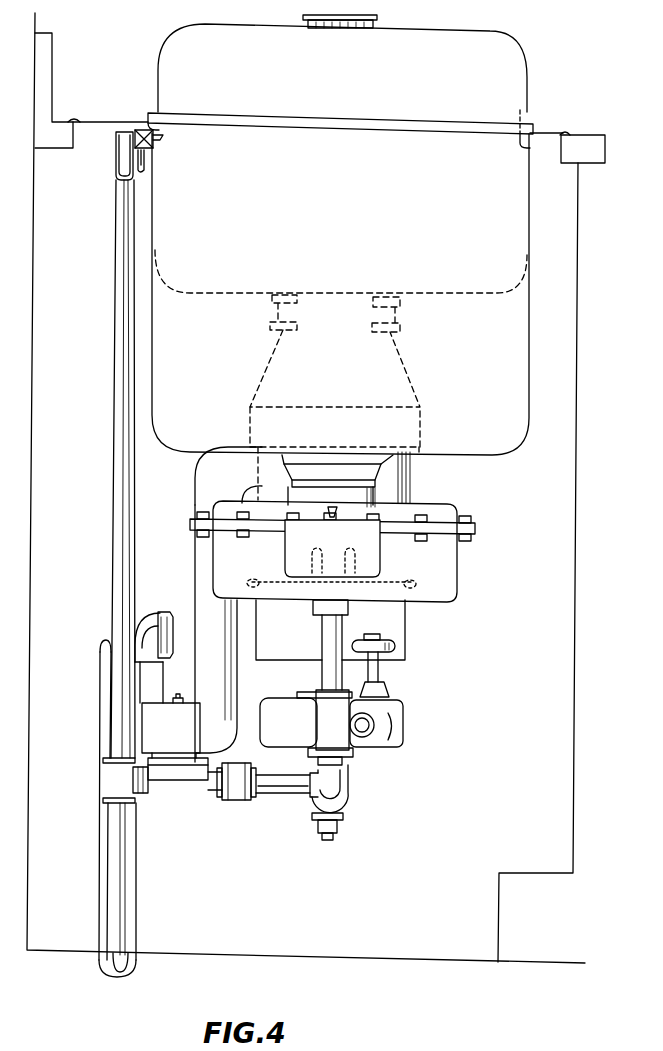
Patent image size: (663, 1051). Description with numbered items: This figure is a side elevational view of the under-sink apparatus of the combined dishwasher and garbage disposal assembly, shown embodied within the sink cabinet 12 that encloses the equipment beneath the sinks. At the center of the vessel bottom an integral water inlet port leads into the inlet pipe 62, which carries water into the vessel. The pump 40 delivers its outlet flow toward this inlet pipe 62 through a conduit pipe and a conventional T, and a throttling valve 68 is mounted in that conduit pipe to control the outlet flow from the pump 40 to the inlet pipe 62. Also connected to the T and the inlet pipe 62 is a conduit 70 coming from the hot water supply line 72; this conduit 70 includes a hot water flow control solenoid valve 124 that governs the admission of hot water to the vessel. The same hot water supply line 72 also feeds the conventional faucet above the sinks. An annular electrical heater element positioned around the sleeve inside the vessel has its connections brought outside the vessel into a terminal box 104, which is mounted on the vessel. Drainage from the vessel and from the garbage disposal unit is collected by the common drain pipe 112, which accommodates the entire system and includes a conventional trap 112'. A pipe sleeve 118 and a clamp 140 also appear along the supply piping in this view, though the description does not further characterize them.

The sink cabinet 12 is at (575, 703).
The pump 40 is at (388, 750).
The inlet pipe 62 is at (337, 635).
The throttling valve 68 is at (388, 694).
The conduit 70 is at (272, 790).
The hot water supply line 72 is at (122, 490).
The terminal box 104 is at (368, 553).
The common drain pipe 112 is at (164, 712).
The trap 112' is at (164, 637).
The pipe sleeve 118 is at (122, 258).
The hot water flow control solenoid valve 124 is at (180, 718).
The clamp 140 is at (155, 145).